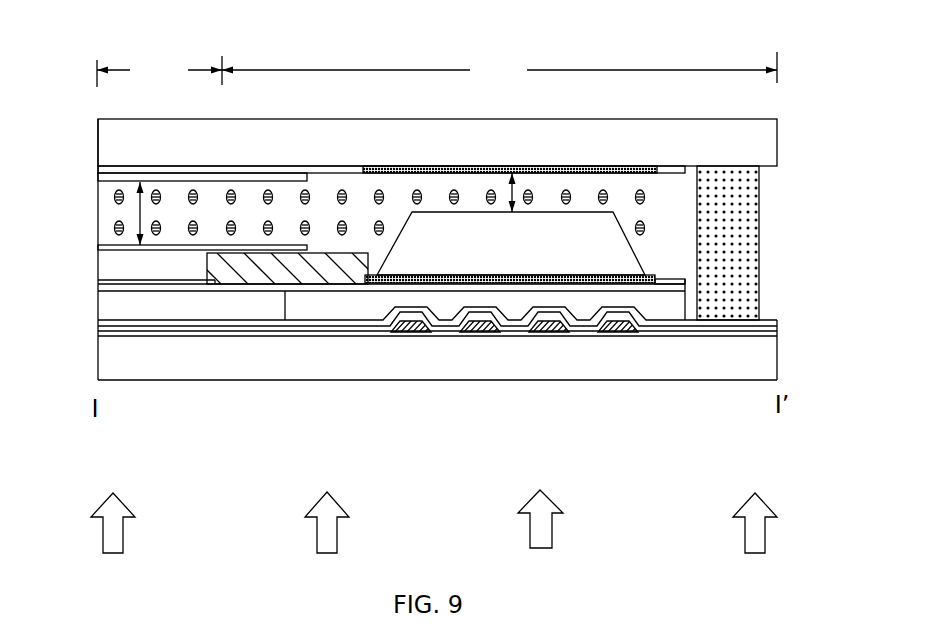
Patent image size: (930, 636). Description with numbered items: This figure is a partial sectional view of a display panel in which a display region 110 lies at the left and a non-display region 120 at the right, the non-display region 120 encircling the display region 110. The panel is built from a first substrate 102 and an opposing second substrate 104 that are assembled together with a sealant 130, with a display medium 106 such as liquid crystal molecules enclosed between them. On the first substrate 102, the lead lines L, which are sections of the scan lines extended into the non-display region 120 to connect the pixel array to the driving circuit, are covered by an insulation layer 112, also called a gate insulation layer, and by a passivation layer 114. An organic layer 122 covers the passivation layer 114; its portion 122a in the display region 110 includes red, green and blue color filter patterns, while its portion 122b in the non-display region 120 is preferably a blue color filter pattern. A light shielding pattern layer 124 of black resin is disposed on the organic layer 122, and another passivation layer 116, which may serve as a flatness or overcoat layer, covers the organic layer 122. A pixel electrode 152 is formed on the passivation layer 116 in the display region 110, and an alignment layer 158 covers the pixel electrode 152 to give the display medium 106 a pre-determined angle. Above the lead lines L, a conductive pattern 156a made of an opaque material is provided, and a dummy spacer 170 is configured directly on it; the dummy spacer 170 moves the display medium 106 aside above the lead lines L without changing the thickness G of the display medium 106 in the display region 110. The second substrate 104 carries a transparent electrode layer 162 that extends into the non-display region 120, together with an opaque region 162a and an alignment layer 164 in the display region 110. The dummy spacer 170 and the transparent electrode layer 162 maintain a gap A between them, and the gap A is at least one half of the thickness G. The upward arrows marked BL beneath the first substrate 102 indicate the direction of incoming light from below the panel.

The first substrate 102 is at (703, 363).
The second substrate 104 is at (760, 137).
The display medium 106 is at (113, 199).
The display region 110 is at (159, 71).
The insulation layer 112 is at (772, 329).
The passivation layer 114 is at (772, 319).
The passivation layer 116 is at (107, 292).
The non-display region 120 is at (499, 67).
The organic layer 122 is at (429, 378).
The organic layer in the display region 122a is at (222, 308).
The organic layer in the non-display region 122b is at (326, 304).
The light shielding pattern layer 124 is at (205, 262).
The sealant 130 is at (738, 208).
The pixel electrode 152 is at (112, 283).
The conductive pattern of an opaque material 156a is at (670, 277).
The alignment layer 158 is at (112, 263).
The transparent electrode layer 162 is at (253, 172).
The opaque region 162a is at (633, 168).
The alignment layer 164 is at (98, 178).
The dummy spacer 170 is at (582, 225).
The thickness G is at (140, 217).
The gap A is at (508, 190).
The lead lines L is at (613, 337).
The backlight BL is at (552, 537).